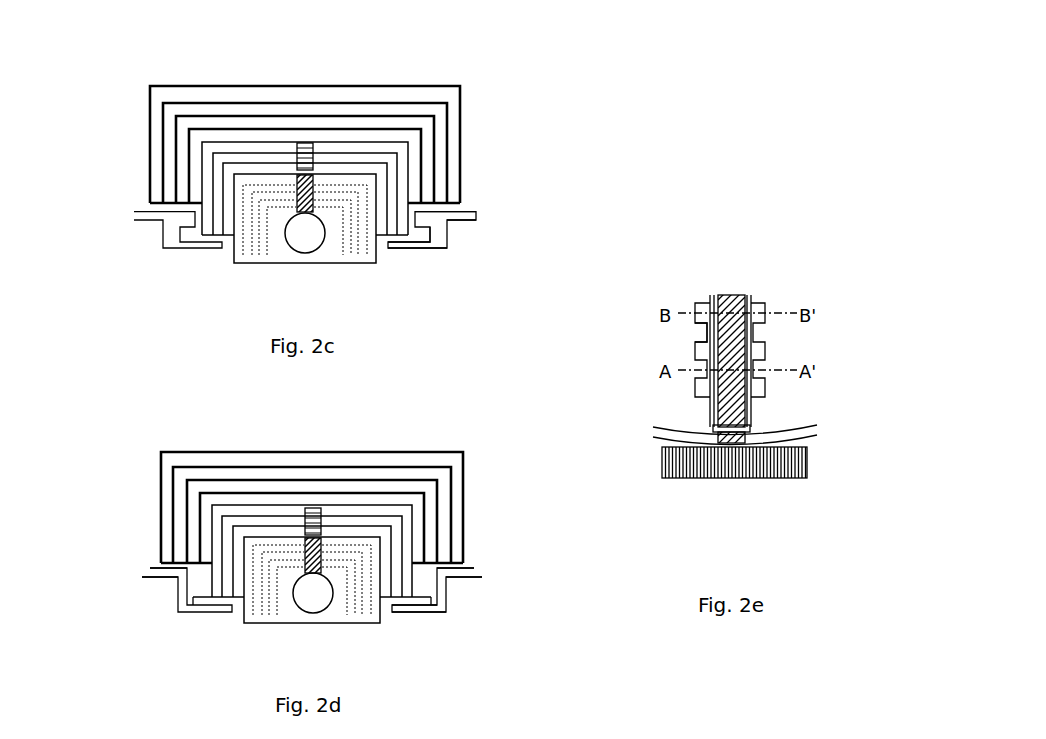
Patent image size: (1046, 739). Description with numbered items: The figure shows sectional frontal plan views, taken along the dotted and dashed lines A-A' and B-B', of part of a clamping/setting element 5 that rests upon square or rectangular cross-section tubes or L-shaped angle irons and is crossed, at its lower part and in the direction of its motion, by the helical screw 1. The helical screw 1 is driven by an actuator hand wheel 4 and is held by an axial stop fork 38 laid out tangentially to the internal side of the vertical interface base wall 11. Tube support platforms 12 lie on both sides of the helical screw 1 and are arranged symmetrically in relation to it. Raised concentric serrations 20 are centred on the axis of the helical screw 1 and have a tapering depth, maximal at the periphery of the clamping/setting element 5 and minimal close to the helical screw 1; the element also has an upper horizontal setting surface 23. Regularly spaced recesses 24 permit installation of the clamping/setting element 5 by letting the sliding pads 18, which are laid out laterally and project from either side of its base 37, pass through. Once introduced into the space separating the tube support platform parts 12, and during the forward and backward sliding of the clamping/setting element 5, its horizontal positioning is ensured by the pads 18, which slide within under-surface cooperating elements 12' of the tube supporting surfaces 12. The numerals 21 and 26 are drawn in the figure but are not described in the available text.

In FIG. 2c, the helical screw 1 is at (302, 230).
In FIG. 2d, the helical screw 1 is at (330, 587).
In FIG. 2e, the helical screw 1 is at (450, 0).
In FIG. 2e, the actuator hand wheel 4 is at (688, 483).
In FIG. 2c, the clamping/setting element 5 is at (162, 83).
In FIG. 2d, the clamping/setting element 5 is at (173, 447).
In FIG. 2e, the vertical interface base wall 11 is at (795, 420).
In FIG. 2c, the tube support platform 12 is at (516, 277).
In FIG. 2d, the tube support platform 12 is at (520, 460).
In FIG. 2e, the tube support platform 12 is at (669, 335).
In FIG. 2c, the under-surface cooperating elements 12' is at (510, 354).
In FIG. 2d, the under-surface cooperating elements 12' is at (498, 546).
In FIG. 2e, the under-surface cooperating elements 12' is at (692, 434).
In FIG. 2c, the sliding pads 18 is at (190, 238).
In FIG. 2d, the sliding pads 18 is at (194, 607).
In FIG. 2c, the raised concentric serrations 20 is at (225, 160).
In FIG. 2d, the raised concentric serrations 20 is at (237, 477).
In FIG. 2c, the hatched insert 21 is at (315, 177).
In FIG. 2d, the hatched insert 21 is at (321, 551).
In FIG. 2c, the upper horizontal setting surface 23 is at (372, 86).
In FIG. 2d, the upper horizontal setting surface 23 is at (379, 452).
In FIG. 2d, the recesses 24 is at (178, 577).
In FIG. 2e, the recesses 24 is at (766, 318).
In FIG. 2c, the striped spacer 26 is at (300, 142).
In FIG. 2d, the striped spacer 26 is at (307, 505).
In FIG. 2c, the base 37 is at (252, 267).
In FIG. 2d, the base 37 is at (262, 625).
In FIG. 2e, the axial stop fork 38 is at (706, 420).